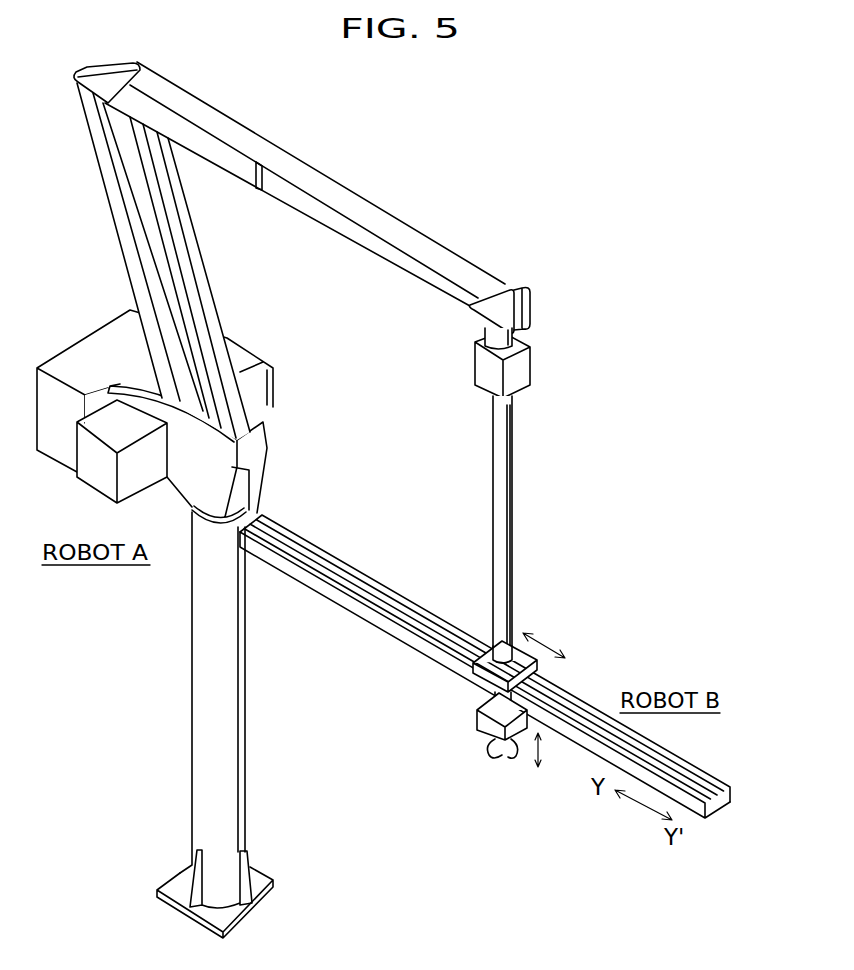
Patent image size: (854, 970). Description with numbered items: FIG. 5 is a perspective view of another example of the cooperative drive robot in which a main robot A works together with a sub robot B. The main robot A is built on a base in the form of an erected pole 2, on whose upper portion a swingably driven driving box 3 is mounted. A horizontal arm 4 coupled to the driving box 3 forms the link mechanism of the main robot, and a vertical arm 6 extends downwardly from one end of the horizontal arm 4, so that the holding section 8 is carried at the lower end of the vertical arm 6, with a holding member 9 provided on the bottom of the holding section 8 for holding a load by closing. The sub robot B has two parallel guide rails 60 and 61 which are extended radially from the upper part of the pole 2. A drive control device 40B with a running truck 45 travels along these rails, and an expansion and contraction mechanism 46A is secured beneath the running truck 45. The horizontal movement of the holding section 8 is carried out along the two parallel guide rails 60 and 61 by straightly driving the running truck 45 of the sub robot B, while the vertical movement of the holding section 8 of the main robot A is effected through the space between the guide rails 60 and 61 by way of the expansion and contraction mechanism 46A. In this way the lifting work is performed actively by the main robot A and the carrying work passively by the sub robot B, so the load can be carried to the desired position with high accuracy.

The pole 2 is at (243, 783).
The driving box 3 is at (245, 362).
The horizontal arm 4 is at (198, 261).
The vertical arm 6 is at (392, 214).
The guide rail 60 is at (370, 582).
The guide rail 61 is at (352, 612).
The drive control device 40B is at (585, 612).
The running truck 45 is at (540, 671).
The expansion and contraction mechanism 46A is at (497, 699).
The holding section 8 is at (452, 778).
The holding member 9 is at (515, 752).